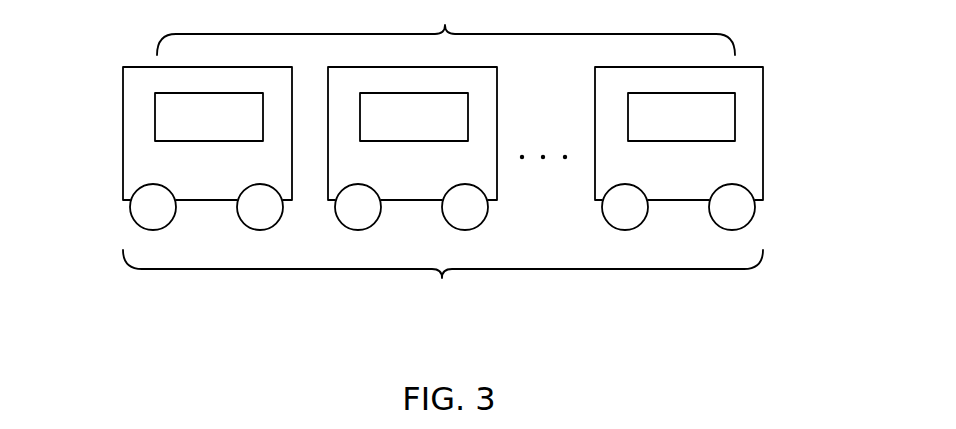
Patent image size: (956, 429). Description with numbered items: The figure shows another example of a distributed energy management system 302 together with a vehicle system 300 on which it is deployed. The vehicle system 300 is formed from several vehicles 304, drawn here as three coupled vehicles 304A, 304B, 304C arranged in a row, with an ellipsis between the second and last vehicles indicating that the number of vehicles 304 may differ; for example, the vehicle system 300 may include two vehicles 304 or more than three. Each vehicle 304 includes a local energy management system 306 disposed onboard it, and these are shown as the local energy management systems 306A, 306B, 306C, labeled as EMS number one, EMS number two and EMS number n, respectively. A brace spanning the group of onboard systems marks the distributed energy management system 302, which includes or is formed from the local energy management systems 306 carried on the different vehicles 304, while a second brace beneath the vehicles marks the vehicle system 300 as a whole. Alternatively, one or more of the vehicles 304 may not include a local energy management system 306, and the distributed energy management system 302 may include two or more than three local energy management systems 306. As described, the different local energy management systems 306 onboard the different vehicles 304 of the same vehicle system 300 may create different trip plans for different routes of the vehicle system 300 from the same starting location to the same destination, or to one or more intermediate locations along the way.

The vehicle system 300 is at (443, 279).
The distributed energy management system 302 is at (446, 28).
The vehicle 304 is at (168, 118).
The first vehicle 304A is at (168, 148).
The second vehicle 304B is at (455, 148).
The third vehicle 304C is at (719, 148).
The local energy management system 306 is at (193, 136).
The first local energy management system 306A is at (185, 126).
The second local energy management system 306B is at (389, 126).
The third local energy management system 306C is at (656, 126).